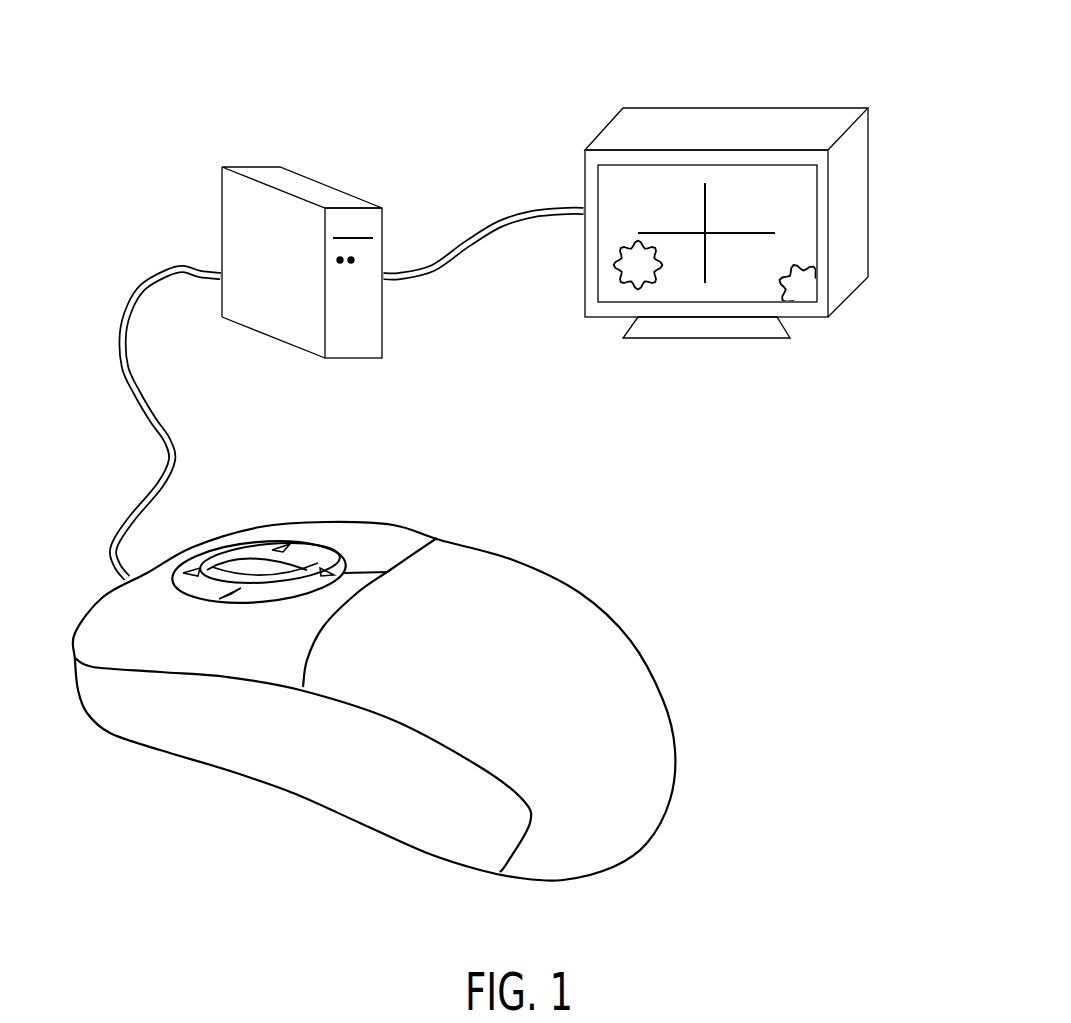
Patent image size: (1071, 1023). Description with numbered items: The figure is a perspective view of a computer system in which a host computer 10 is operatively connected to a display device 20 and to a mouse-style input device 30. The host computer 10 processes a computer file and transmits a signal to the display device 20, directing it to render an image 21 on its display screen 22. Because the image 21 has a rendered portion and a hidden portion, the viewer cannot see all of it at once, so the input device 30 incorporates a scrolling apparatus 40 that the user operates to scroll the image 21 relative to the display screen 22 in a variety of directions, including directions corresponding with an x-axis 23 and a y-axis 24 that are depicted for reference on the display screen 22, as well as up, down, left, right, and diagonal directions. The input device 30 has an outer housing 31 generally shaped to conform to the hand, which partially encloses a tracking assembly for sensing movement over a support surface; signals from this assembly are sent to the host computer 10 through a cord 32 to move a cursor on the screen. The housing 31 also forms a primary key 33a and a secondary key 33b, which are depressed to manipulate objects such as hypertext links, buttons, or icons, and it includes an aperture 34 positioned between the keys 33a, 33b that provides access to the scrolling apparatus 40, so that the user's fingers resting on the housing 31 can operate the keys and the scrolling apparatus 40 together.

The host computer 10 is at (356, 179).
The display device 20 is at (885, 166).
The image 21 is at (790, 267).
The display screen 22 is at (613, 302).
The x-axis 23 is at (743, 233).
The y-axis 24 is at (707, 268).
The input device 30 is at (590, 592).
The outer housing 31 is at (627, 673).
The cord 32 is at (176, 427).
The primary key 33a is at (233, 650).
The secondary key 33b is at (267, 532).
The aperture 34 is at (336, 557).
The scrolling apparatus 40 is at (319, 538).